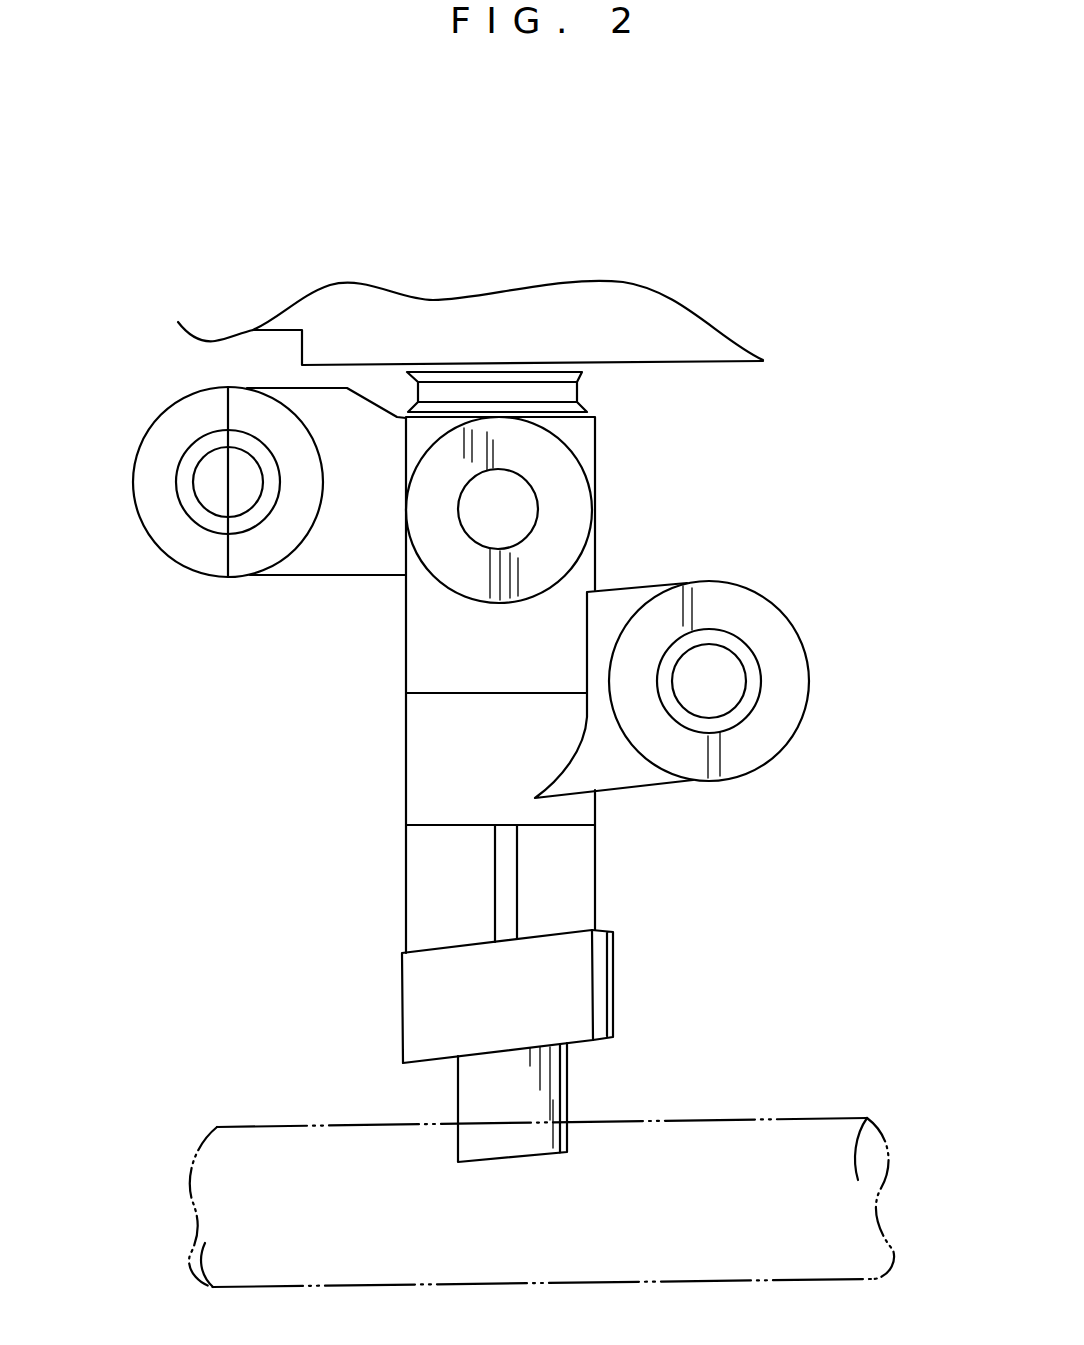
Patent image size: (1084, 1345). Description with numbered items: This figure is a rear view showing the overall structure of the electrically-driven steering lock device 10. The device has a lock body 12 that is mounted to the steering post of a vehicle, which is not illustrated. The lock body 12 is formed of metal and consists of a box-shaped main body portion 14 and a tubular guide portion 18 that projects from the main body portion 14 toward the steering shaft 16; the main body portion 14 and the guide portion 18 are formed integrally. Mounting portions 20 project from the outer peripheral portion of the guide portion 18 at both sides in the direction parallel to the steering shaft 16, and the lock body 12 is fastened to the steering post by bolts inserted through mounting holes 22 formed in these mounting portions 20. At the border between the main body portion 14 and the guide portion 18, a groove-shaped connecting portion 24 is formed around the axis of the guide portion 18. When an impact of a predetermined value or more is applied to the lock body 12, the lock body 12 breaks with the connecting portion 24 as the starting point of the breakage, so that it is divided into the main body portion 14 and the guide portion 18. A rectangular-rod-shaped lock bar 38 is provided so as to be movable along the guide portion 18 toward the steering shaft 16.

The electrically-driven steering lock device 10 is at (510, 763).
The lock body 12 is at (597, 522).
The main body portion 14 is at (670, 313).
The steering shaft 16 is at (748, 1118).
The guide portion 18 is at (423, 890).
The mounting portions 20 is at (143, 535).
The mounting holes 22 is at (200, 474).
The connecting portion 24 is at (563, 385).
The lock bar 38 is at (567, 1082).